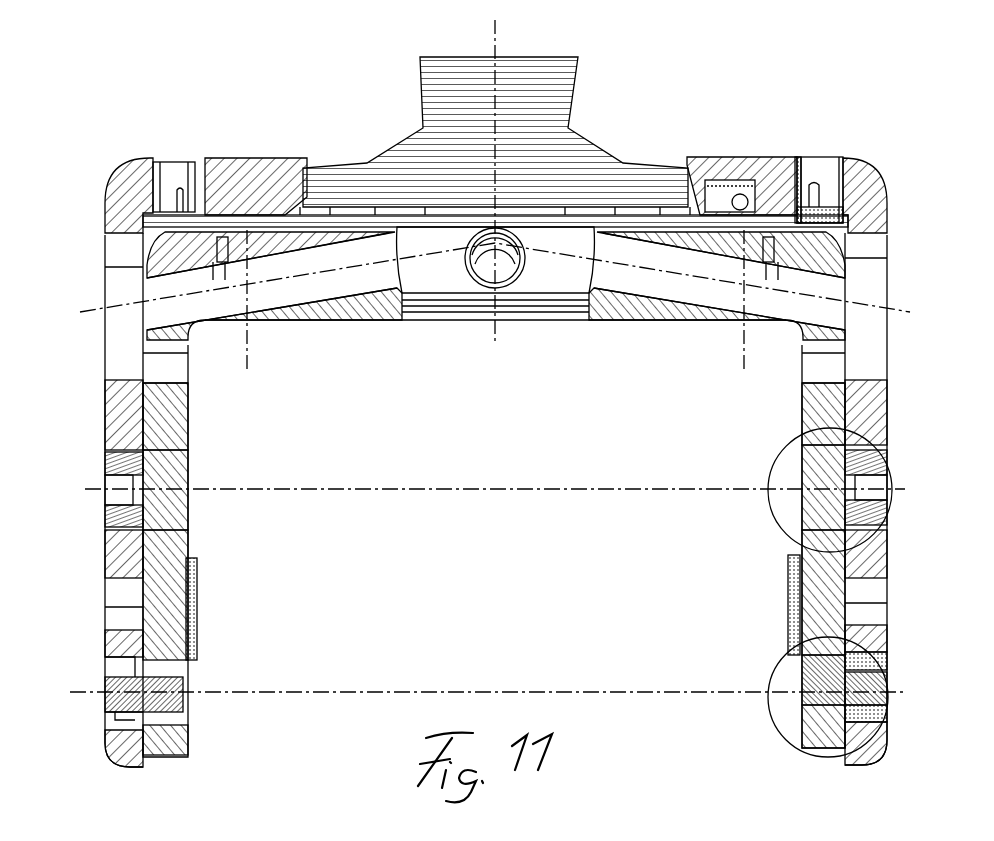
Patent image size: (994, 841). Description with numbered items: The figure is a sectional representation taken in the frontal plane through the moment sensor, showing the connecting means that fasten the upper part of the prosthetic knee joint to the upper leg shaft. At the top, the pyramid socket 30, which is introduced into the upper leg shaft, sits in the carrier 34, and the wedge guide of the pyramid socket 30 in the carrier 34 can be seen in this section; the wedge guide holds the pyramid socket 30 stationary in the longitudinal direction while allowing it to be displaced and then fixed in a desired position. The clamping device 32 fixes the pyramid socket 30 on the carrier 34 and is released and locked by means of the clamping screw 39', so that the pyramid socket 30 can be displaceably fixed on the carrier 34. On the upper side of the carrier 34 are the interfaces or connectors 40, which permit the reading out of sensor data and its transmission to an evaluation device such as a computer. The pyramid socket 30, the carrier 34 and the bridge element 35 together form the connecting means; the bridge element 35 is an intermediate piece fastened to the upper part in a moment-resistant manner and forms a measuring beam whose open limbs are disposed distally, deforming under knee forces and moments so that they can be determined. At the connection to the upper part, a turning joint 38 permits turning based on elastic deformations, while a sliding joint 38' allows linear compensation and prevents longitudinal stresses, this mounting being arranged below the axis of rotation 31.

The pyramid socket 30 is at (598, 160).
The axis of rotation 31 is at (428, 491).
The clamping device 32 is at (727, 157).
The carrier 34 is at (262, 158).
The bridge element 35 is at (833, 413).
The turning joint 38 is at (89, 743).
The sliding joint 38' is at (791, 743).
The clamping screw 39' is at (809, 133).
The connectors 40 is at (180, 160).